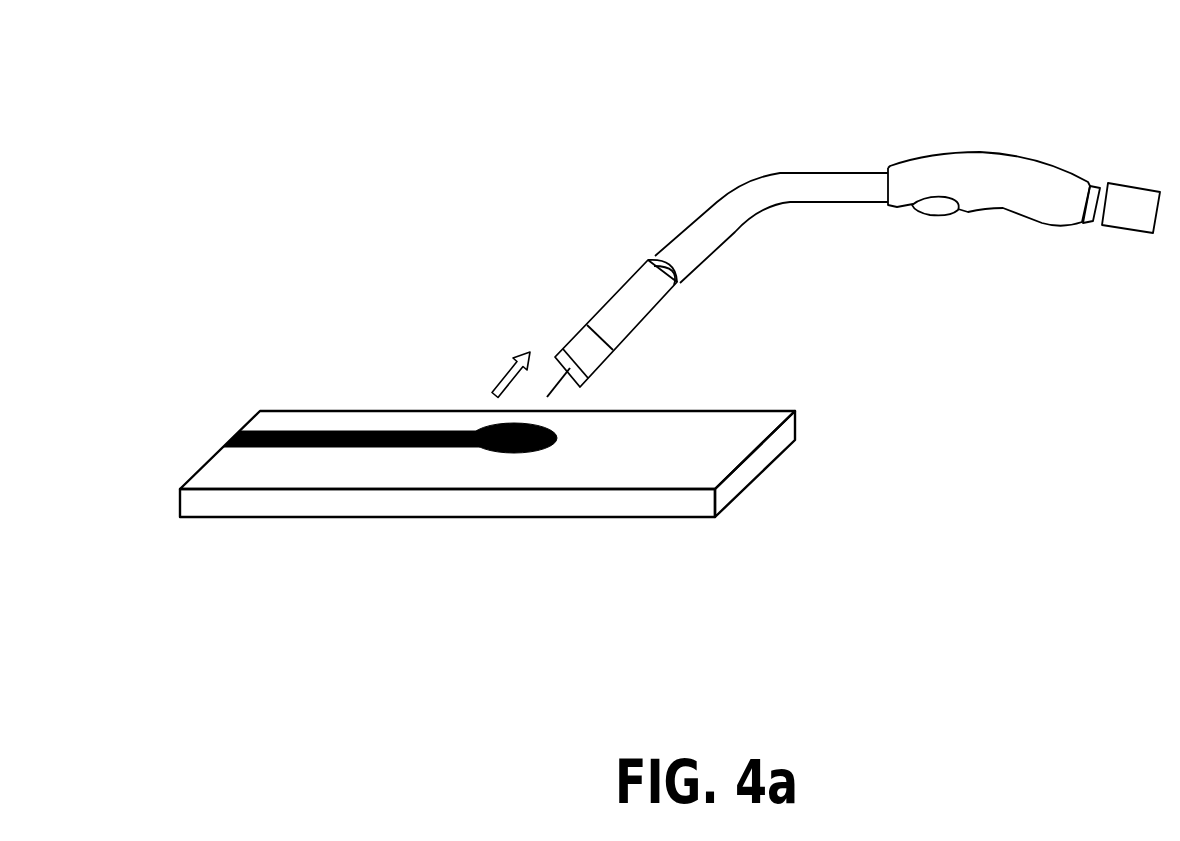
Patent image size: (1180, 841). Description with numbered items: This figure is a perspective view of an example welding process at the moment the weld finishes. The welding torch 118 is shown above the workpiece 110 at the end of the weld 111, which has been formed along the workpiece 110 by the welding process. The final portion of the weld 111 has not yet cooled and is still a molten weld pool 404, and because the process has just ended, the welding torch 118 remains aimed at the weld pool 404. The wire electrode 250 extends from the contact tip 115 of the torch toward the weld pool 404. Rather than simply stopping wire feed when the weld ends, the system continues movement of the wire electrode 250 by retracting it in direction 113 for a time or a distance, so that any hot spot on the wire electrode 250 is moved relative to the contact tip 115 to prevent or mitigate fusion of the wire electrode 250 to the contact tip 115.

The workpiece 110 is at (178, 502).
The weld 111 is at (362, 422).
The direction 113 is at (492, 382).
The contact tip 115 is at (592, 373).
The welding torch 118 is at (839, 218).
The wire electrode 250 is at (562, 377).
The molten weld pool 404 is at (564, 438).